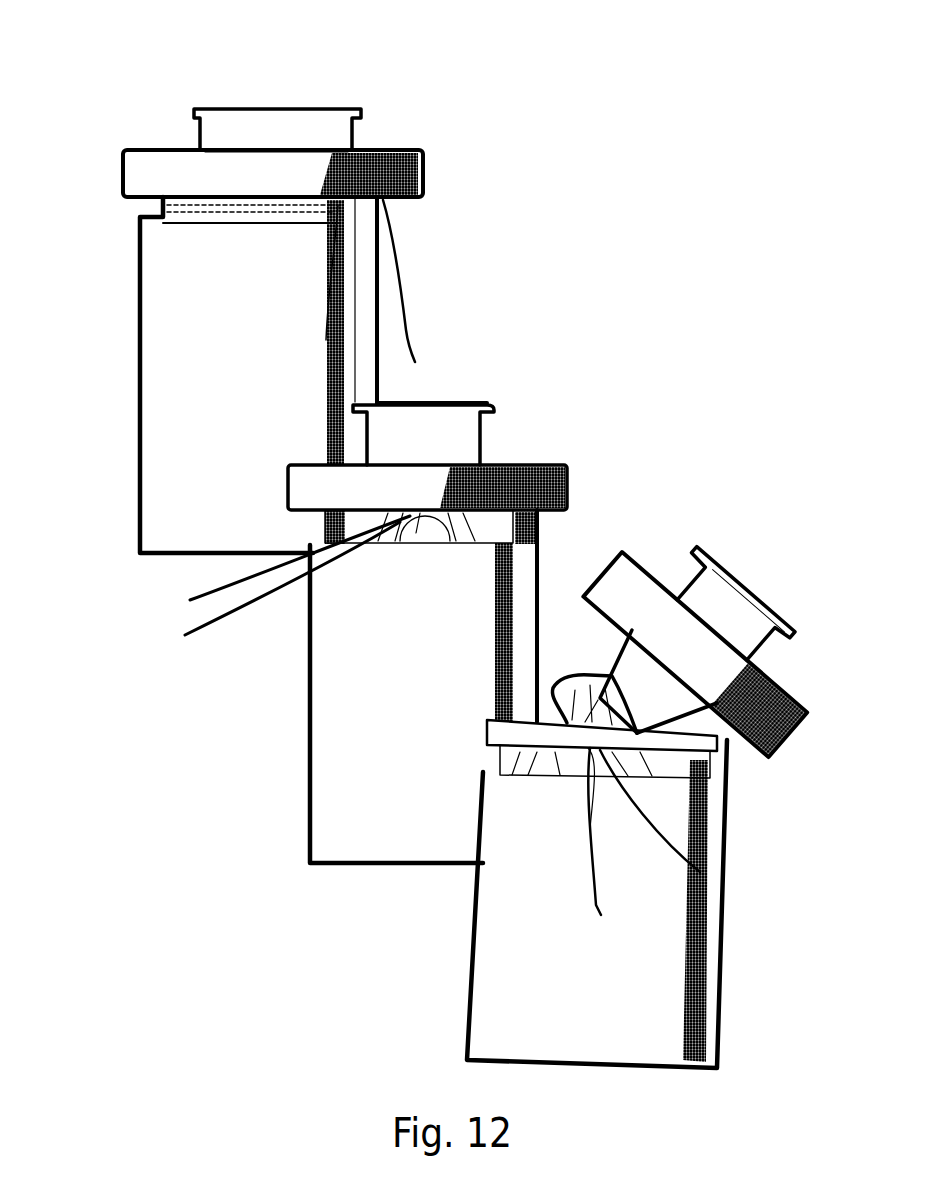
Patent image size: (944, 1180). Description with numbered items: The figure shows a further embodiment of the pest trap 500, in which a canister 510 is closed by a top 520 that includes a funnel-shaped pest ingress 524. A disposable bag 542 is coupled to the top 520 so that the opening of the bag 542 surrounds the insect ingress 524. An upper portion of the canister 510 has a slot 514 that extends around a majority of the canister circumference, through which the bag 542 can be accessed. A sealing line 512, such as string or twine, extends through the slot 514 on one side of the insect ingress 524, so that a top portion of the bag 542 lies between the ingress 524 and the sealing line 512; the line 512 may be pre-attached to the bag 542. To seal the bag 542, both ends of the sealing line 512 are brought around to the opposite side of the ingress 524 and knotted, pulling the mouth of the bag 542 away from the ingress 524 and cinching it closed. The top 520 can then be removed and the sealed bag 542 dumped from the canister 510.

The pest trap 500 is at (126, 83).
The canister 510 is at (190, 476).
The sealing line 512 is at (402, 298).
The slot 514 is at (134, 207).
The top 520 is at (432, 134).
The pest ingress 524 is at (723, 729).
The disposable bag 542 is at (450, 527).